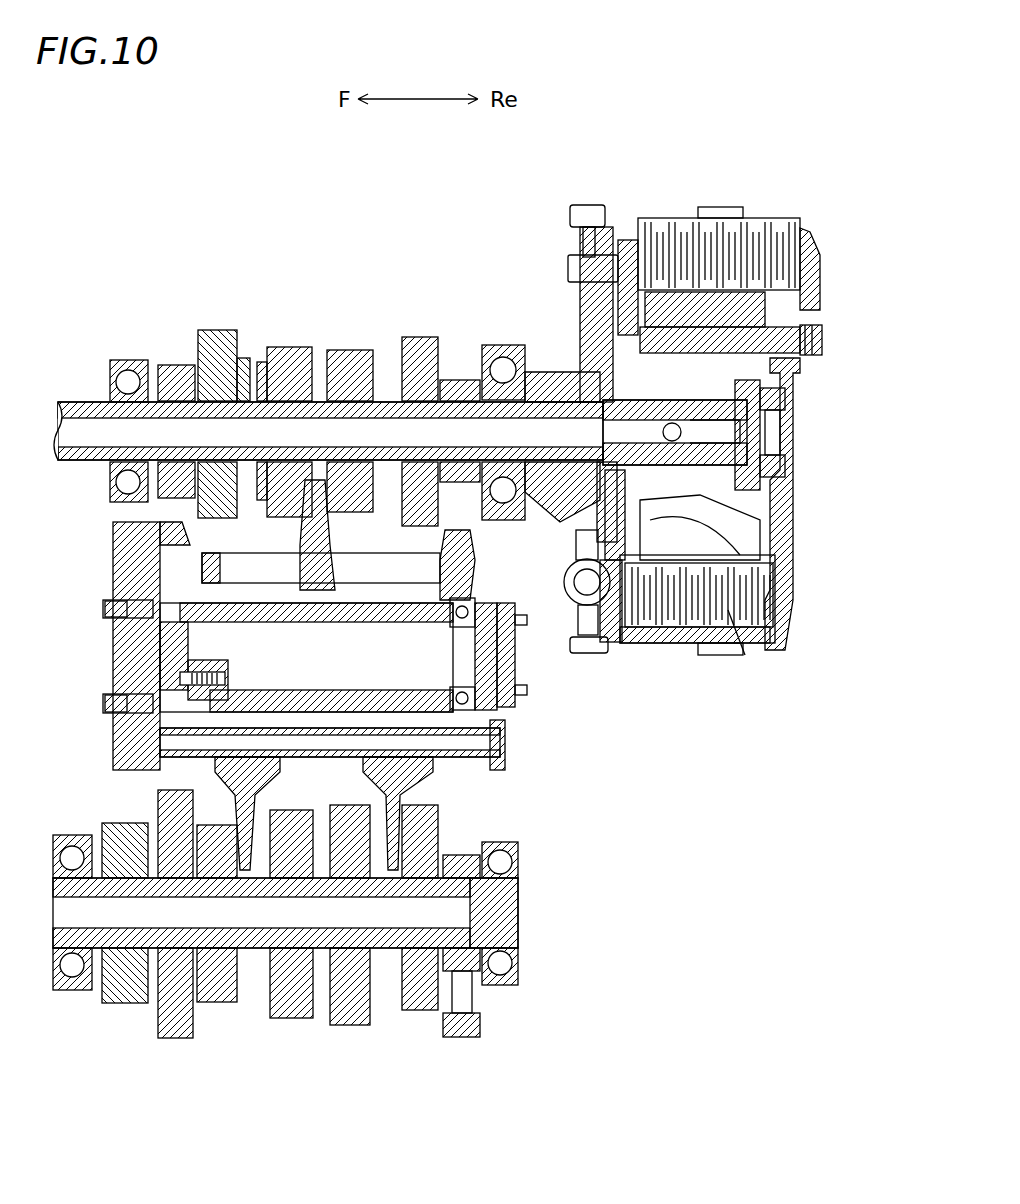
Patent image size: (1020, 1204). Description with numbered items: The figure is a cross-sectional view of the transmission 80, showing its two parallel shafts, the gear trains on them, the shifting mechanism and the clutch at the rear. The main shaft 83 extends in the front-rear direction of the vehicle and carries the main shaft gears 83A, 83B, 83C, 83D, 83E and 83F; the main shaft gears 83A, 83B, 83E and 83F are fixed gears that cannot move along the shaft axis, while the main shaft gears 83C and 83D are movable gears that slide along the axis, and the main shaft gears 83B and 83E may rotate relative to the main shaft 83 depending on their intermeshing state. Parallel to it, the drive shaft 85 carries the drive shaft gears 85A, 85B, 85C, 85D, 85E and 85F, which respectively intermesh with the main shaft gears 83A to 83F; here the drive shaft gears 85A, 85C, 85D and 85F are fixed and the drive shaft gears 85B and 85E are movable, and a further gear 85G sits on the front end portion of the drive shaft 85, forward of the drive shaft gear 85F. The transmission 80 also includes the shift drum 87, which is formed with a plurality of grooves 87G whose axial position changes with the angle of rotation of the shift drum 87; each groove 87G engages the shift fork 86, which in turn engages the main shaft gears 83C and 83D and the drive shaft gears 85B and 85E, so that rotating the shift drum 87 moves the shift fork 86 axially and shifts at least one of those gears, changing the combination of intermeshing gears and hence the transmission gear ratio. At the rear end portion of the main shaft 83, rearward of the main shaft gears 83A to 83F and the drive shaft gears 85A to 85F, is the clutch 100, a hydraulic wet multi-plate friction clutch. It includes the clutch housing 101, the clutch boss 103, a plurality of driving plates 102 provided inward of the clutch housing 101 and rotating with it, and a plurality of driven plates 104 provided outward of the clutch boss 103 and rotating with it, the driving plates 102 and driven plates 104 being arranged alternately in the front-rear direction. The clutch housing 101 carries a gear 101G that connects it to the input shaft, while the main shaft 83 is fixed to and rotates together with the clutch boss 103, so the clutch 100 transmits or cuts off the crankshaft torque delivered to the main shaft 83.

The transmission 80 is at (788, 184).
The clutch 100 is at (832, 274).
The main shaft 83 is at (128, 458).
The main shaft gear 83A is at (457, 382).
The main shaft gear 83B is at (420, 340).
The main shaft gear 83C is at (350, 354).
The main shaft gear 83D is at (290, 352).
The main shaft gear 83E is at (215, 335).
The main shaft gear 83F is at (175, 365).
The drive shaft 85 is at (518, 968).
The drive shaft gear 85A is at (466, 1037).
The drive shaft gear 85B is at (416, 1010).
The drive shaft gear 85C is at (348, 1025).
The drive shaft gear 85D is at (282, 1018).
The drive shaft gear 85E is at (212, 1002).
The drive shaft gear 85F is at (172, 1036).
The gear 85G is at (118, 1000).
The shift fork 86 is at (240, 525).
The shift drum 87 is at (145, 645).
The groove 87G is at (210, 568).
The clutch housing 101 is at (660, 645).
The gear 101G is at (592, 655).
The driving plates 102 is at (757, 603).
The clutch boss 103 is at (700, 520).
The driven plates 104 is at (740, 635).